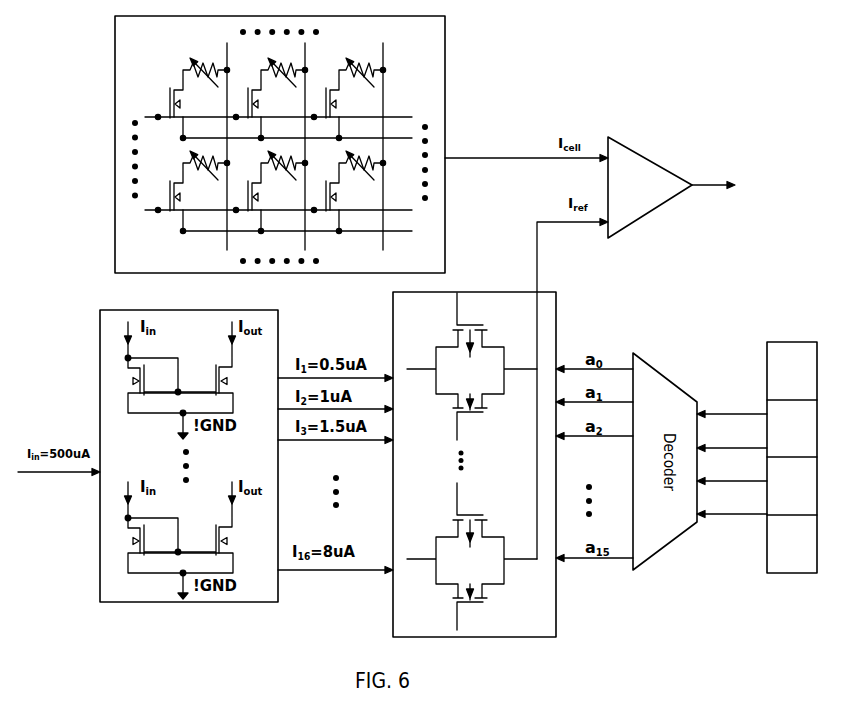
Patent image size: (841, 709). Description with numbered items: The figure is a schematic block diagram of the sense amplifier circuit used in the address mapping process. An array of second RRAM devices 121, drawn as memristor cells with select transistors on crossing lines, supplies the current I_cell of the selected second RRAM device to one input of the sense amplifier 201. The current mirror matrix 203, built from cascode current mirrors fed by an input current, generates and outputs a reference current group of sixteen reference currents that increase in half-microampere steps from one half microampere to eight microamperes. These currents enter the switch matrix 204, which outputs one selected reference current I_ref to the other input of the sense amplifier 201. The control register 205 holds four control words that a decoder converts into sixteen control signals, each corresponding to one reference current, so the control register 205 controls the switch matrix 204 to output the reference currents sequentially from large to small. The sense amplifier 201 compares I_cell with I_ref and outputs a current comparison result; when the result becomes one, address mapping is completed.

The RRAM device array 121 is at (446, 102).
The sense amplifier 201 is at (650, 157).
The current mirror matrix 203 is at (100, 320).
The switch matrix 204 is at (565, 310).
The control register 205 is at (767, 355).